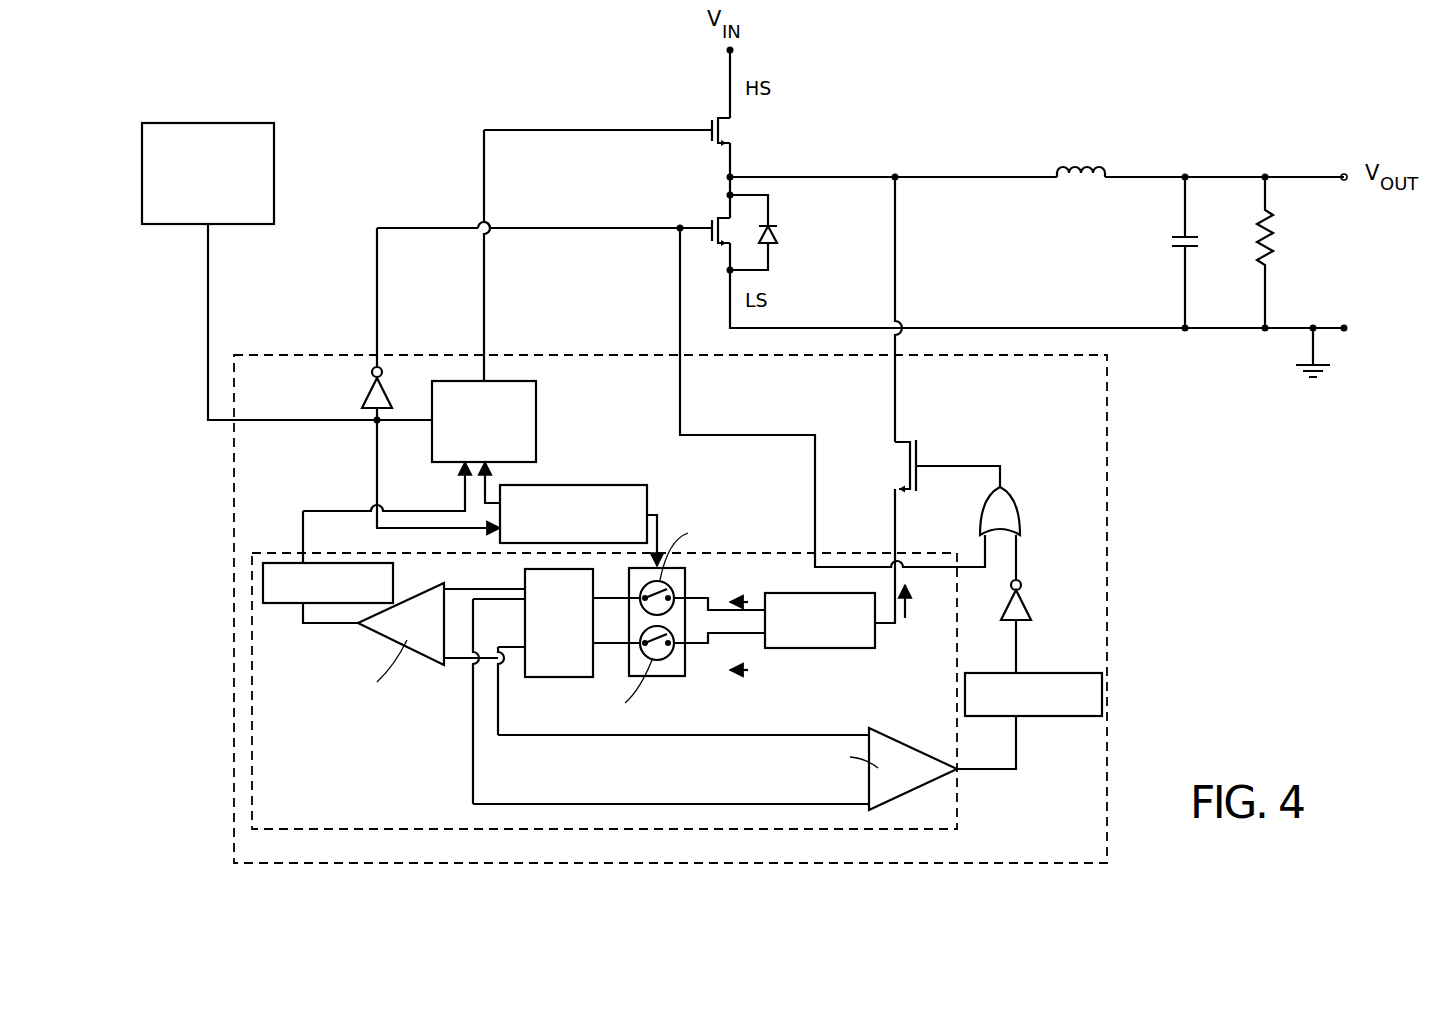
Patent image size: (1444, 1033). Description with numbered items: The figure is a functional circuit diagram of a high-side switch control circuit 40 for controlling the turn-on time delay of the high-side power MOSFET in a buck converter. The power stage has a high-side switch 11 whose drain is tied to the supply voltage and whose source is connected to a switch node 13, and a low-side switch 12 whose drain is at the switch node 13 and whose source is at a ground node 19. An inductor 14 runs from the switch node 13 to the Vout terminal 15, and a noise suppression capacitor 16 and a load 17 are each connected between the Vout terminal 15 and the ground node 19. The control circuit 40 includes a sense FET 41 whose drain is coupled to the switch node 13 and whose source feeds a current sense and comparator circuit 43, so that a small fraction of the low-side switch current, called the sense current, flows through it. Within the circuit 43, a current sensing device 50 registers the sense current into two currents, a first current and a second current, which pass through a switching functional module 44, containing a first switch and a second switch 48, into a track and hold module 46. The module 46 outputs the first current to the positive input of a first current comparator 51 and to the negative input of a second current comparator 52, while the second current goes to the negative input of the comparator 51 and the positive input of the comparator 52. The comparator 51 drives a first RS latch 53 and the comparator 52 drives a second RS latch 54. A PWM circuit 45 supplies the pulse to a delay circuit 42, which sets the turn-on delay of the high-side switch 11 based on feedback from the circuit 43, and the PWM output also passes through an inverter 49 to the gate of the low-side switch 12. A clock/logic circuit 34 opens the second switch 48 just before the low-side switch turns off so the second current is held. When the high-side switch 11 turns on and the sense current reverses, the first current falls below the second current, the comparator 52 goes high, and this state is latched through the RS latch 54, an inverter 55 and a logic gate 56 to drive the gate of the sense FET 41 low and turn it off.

The high-side switch 11 is at (712, 128).
The low-side switch 12 is at (712, 226).
The switch node 13 is at (733, 176).
The inductor 14 is at (1088, 160).
The Vout terminal 15 is at (772, 240).
The noise suppression capacitor 16 is at (1178, 236).
The load 17 is at (1272, 230).
The ground node 19 is at (1313, 378).
The clock/logic circuit 34 is at (610, 485).
The high-side switch control circuit 40 is at (1107, 535).
The sense FET 41 is at (918, 472).
The delay circuit 42 is at (536, 392).
The current sense and comparator circuit 43 is at (365, 829).
The switching functional module 44 is at (679, 615).
The PWM circuit 45 is at (238, 224).
The track and hold module 46 is at (545, 677).
The switch S2 48 is at (664, 677).
The inverter 49 is at (368, 402).
The current sensing device 50 is at (812, 648).
The first current comparator 51 is at (426, 662).
The second current comparator 52 is at (890, 735).
The first RS latch 53 is at (268, 603).
The second RS latch 54 is at (1025, 716).
The inverter 55 is at (1026, 606).
The logic gate 56 is at (1021, 518).